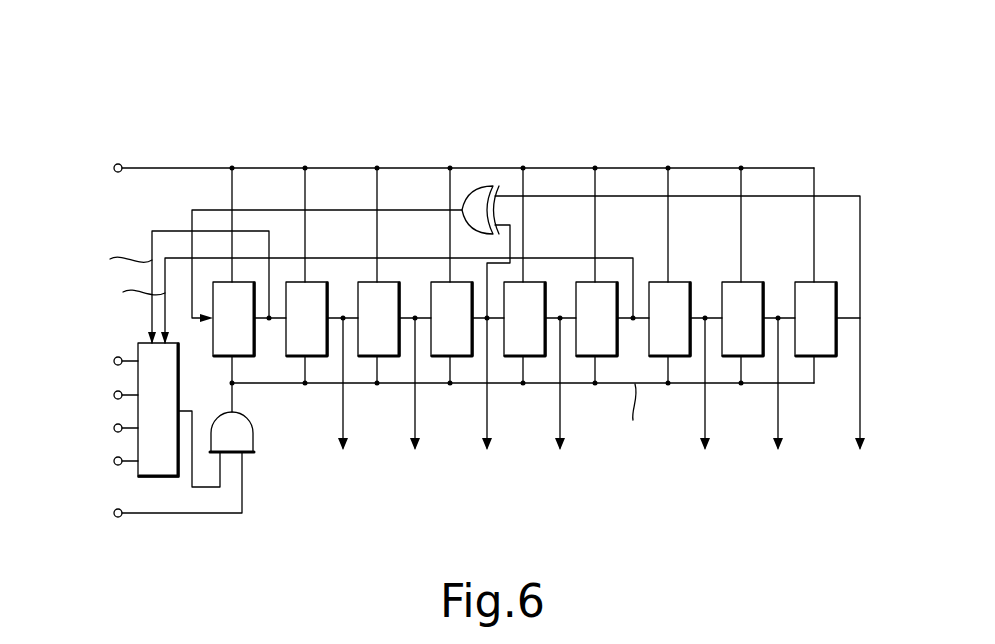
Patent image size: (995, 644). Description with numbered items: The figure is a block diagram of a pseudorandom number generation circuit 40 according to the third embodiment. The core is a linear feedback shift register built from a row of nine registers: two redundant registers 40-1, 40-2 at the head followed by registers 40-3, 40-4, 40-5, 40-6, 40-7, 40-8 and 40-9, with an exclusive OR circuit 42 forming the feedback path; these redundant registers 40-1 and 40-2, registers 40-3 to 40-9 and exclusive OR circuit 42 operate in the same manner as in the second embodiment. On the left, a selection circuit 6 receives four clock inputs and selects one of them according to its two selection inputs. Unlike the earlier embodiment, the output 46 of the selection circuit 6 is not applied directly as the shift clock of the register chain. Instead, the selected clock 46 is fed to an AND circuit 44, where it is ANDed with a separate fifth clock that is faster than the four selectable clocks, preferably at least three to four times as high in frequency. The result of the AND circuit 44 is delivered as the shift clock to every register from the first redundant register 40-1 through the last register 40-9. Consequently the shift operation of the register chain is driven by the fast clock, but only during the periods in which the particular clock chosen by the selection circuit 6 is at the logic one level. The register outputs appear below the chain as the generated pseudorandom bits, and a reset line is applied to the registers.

The pseudorandom number generation circuit 40 is at (120, 125).
The redundant register 40-1 is at (221, 282).
The redundant register 40-2 is at (294, 282).
The register 40-3 is at (366, 282).
The register 40-4 is at (439, 282).
The register 40-5 is at (537, 282).
The register 40-6 is at (609, 282).
The register 40-7 is at (682, 282).
The register 40-8 is at (755, 282).
The register 40-9 is at (828, 282).
The exclusive OR circuit 42 is at (483, 186).
The AND circuit 44 is at (255, 442).
The output of the selection circuit 46 is at (187, 410).
The selection circuit 6 is at (163, 478).